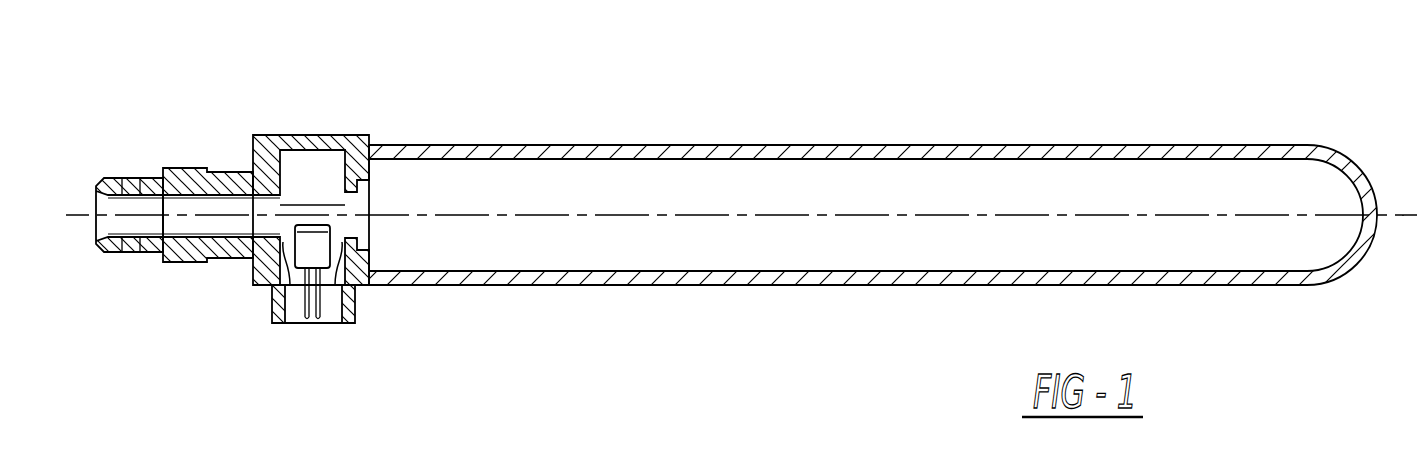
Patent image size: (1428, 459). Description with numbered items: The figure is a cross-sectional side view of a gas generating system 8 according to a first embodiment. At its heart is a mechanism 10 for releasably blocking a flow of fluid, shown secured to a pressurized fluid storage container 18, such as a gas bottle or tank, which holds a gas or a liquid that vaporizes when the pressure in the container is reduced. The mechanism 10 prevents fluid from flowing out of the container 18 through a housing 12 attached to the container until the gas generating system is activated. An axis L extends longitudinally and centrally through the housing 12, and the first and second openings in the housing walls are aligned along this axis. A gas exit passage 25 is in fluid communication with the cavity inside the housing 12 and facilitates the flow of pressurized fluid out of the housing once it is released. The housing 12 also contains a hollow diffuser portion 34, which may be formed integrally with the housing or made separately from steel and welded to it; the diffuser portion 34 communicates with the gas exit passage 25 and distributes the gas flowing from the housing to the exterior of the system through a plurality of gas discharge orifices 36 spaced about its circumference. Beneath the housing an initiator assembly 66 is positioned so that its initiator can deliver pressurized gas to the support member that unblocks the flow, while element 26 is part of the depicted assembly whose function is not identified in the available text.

The gas generating system 8 is at (818, 368).
The mechanism for releasably blocking a flow of fluid 10 is at (376, 101).
The housing 12 is at (252, 136).
The pressurized fluid storage container 18 is at (442, 145).
The gas exit passage 25 is at (152, 178).
The sensor element 26 is at (365, 265).
The diffuser portion 34 is at (92, 252).
The gas discharge orifices 36 is at (533, 153).
The initiator assembly 66 is at (355, 323).
The axis L is at (1403, 216).